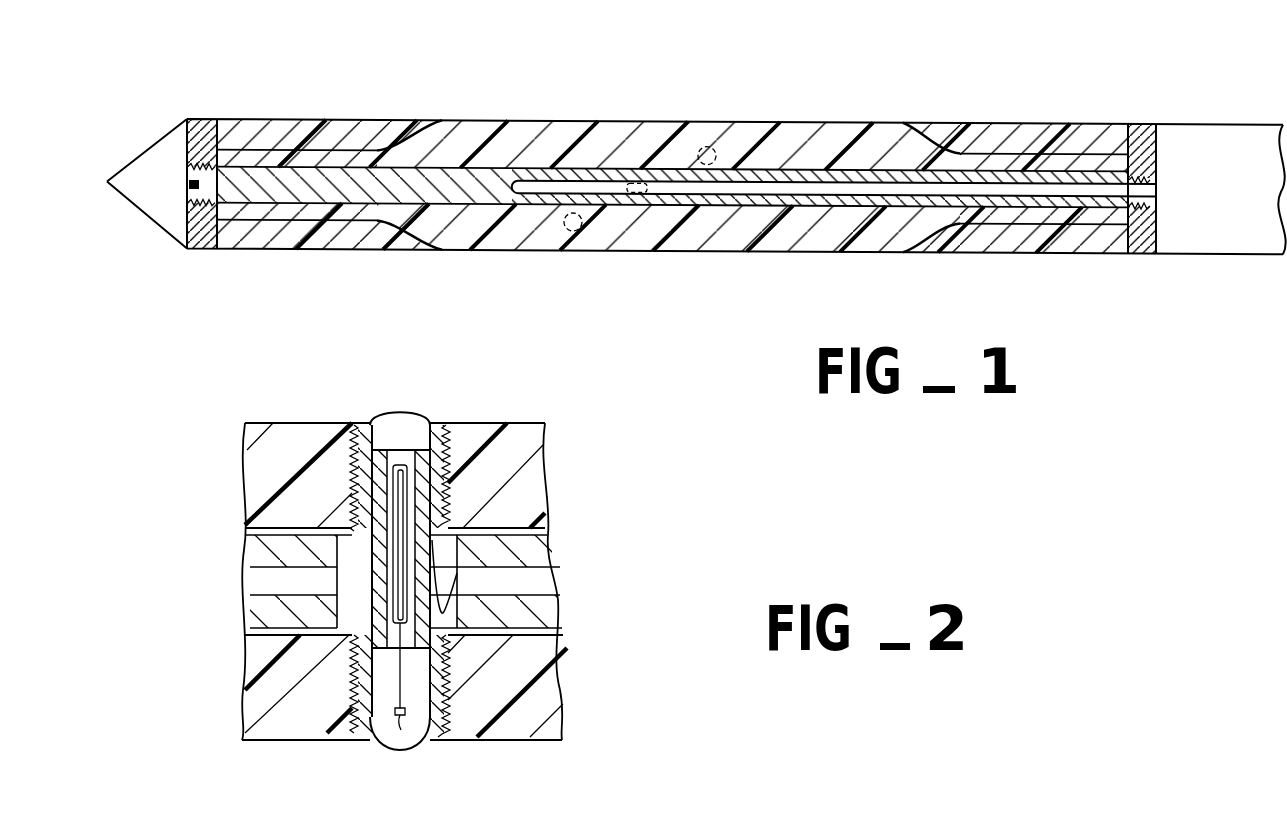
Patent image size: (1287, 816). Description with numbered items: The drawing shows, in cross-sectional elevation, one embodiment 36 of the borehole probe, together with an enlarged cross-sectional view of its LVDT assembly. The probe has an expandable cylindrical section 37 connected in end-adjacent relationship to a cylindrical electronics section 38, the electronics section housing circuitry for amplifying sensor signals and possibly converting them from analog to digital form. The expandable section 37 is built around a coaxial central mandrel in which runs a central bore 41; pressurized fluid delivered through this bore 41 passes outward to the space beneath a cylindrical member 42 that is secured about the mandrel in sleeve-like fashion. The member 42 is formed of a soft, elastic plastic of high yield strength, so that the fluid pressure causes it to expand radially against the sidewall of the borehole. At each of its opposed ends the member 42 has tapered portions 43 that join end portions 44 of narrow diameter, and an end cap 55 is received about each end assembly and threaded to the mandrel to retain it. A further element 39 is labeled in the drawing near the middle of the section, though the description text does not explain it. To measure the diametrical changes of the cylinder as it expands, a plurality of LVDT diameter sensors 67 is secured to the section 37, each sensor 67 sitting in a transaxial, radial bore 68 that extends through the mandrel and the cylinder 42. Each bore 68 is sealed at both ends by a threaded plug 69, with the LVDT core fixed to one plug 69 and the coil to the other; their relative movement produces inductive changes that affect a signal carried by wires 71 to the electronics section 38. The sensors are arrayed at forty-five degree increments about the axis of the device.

In FIG. 1, the embodiment of the borehole probe 36 is at (488, 104).
In FIG. 1, the expandable cylindrical section 37 is at (1000, 123).
In FIG. 1, the electronics section 38 is at (1220, 125).
In FIG. 1, the insulating sleeve 39 is at (670, 200).
In FIG. 1, the central bore 41 is at (820, 187).
In FIG. 1, the cylindrical member 42 is at (575, 130).
In FIG. 2, the cylindrical member 42 is at (520, 437).
In FIG. 1, the tapered portions 43 is at (410, 133).
In FIG. 1, the end portions of narrow diameter 44 is at (280, 150).
In FIG. 1, the end cap 55 is at (203, 130).
In FIG. 2, the LVDT diameter sensor 67 is at (352, 508).
In FIG. 2, the transaxial radial bore 68 is at (355, 593).
In FIG. 2, the threaded plug 69 is at (402, 412).
In FIG. 2, the wires 71 is at (457, 577).